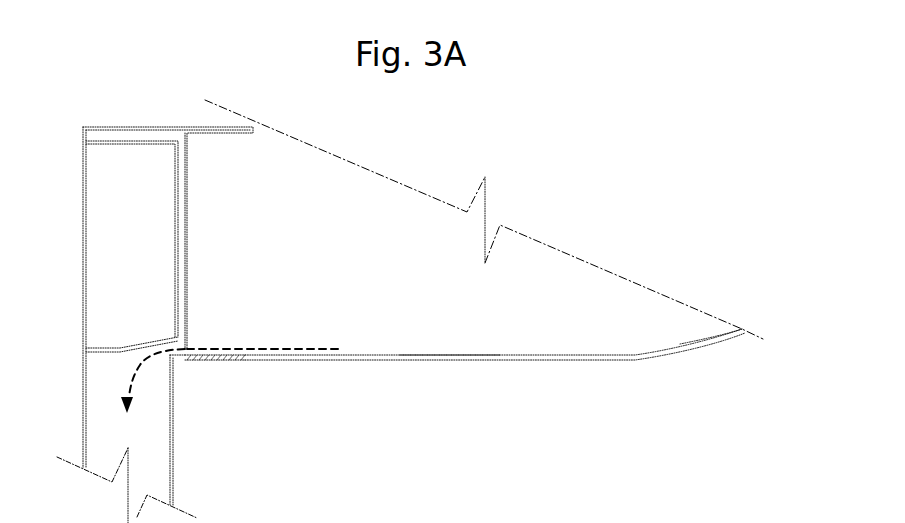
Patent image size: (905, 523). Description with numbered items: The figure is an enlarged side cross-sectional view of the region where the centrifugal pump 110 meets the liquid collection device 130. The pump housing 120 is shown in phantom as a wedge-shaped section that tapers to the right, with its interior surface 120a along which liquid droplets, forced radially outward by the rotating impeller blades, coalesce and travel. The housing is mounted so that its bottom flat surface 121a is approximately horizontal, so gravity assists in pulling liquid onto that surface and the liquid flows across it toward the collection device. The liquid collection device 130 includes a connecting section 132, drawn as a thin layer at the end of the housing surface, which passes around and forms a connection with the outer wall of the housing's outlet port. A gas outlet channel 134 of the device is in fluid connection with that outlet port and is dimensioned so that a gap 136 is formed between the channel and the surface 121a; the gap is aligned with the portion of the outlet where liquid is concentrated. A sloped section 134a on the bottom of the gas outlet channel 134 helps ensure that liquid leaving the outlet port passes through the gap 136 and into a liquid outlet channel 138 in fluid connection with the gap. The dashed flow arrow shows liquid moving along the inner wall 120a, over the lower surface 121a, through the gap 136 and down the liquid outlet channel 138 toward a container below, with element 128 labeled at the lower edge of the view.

The liquid collection device 130 is at (93, 106).
The gas outlet channel 134 is at (150, 170).
The sloped section 134a is at (153, 337).
The gap 136 is at (180, 358).
The connecting section 132 is at (225, 363).
The liquid outlet channel 138 is at (143, 420).
The lower member 128 is at (314, 519).
The centrifugal pump 110 is at (540, 382).
The bottom flat surface 121a is at (440, 355).
The pump housing 120 is at (672, 358).
The interior surface 120a is at (680, 340).